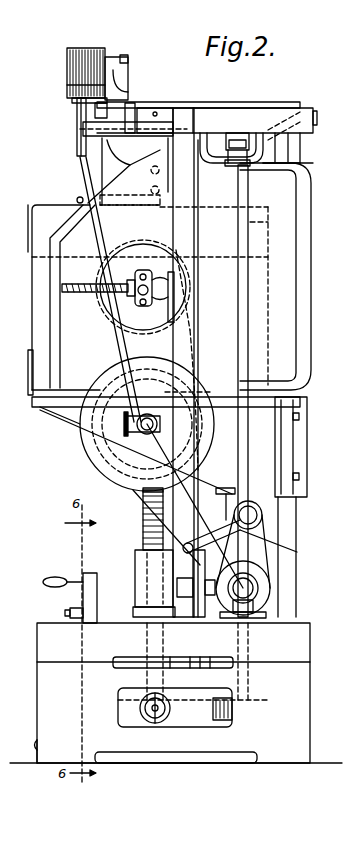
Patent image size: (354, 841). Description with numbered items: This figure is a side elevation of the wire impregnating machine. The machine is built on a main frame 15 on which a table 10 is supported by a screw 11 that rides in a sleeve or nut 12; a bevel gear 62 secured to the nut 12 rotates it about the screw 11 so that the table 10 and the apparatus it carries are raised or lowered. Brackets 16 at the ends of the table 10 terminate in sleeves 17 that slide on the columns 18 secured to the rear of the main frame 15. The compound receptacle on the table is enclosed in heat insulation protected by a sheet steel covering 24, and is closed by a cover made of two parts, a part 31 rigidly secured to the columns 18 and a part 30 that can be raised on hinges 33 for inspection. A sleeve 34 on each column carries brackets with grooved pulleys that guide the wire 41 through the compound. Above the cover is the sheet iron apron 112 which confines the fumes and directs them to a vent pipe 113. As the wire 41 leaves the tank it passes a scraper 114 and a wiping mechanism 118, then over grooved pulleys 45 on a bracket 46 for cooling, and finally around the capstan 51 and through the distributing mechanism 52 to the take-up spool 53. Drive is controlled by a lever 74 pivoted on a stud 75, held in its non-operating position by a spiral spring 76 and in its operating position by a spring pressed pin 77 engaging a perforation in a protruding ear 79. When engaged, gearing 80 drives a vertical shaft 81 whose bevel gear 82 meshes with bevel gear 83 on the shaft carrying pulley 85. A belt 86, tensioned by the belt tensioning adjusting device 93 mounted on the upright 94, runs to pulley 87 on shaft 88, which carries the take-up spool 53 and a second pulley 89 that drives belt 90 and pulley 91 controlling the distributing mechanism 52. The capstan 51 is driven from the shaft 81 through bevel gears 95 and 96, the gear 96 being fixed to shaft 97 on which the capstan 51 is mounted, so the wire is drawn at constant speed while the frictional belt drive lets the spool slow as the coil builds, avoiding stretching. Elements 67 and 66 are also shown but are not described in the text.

The grooved pulleys 45 is at (90, 50).
The bracket 46 is at (118, 92).
The wire 41 is at (72, 98).
The capstan 51 is at (75, 131).
The shaft 97 is at (165, 127).
The bevel gear 96 is at (238, 108).
The bevel gear 95 is at (240, 140).
The vent pipe 113 is at (292, 140).
The wiping mechanism 118 is at (295, 150).
The sleeve 34 is at (302, 168).
The sheet iron apron 112 is at (296, 280).
The cover part 31 is at (268, 222).
The hinged cover part 30 is at (45, 210).
The sheet steel covering 24 is at (42, 315).
The scraper 114 is at (78, 198).
The hinges 33 is at (152, 195).
The pulley 91 is at (148, 244).
The distributing mechanism 52 is at (115, 300).
The belt 90 is at (188, 322).
The upright 94 is at (192, 325).
The take-up spool 53 is at (106, 385).
The shaft 88 is at (147, 426).
The second pulley 89 is at (147, 412).
The pulley 87 is at (197, 386).
The table 10 is at (42, 407).
The brackets 16 is at (70, 410).
The sleeves 17 is at (300, 436).
The bar 67 is at (232, 493).
The belt 86 is at (143, 490).
The screw 11 is at (143, 520).
The belt tensioning adjusting device 93 is at (263, 515).
The arm 66 is at (255, 553).
The vertical shaft 81 is at (270, 560).
The sleeve or nut 12 is at (135, 572).
The columns 18 is at (300, 580).
The lever 74 is at (43, 584).
The protruding ear 79 is at (97, 615).
The spring pressed pin 77 is at (65, 612).
The bevel gear 83 is at (258, 588).
The bevel gear 82 is at (250, 606).
The pulley 85 is at (222, 612).
The main frame 15 is at (303, 636).
The spiral spring 76 is at (37, 662).
The bevel gear 62 is at (125, 692).
The gearing 80 is at (145, 716).
The stud 75 is at (36, 750).